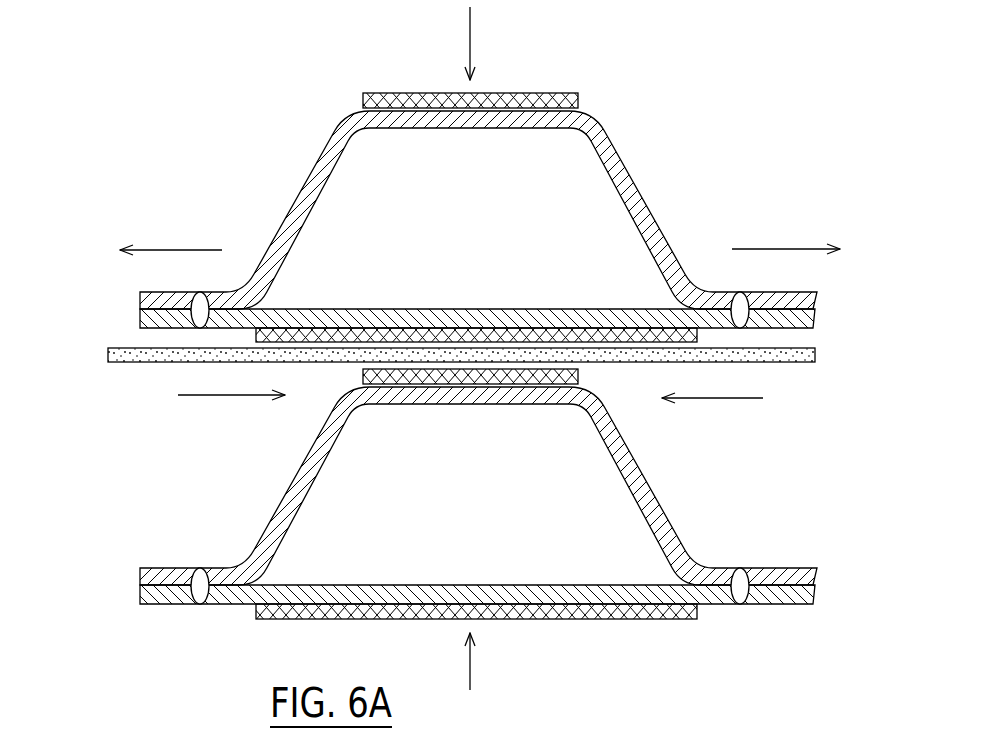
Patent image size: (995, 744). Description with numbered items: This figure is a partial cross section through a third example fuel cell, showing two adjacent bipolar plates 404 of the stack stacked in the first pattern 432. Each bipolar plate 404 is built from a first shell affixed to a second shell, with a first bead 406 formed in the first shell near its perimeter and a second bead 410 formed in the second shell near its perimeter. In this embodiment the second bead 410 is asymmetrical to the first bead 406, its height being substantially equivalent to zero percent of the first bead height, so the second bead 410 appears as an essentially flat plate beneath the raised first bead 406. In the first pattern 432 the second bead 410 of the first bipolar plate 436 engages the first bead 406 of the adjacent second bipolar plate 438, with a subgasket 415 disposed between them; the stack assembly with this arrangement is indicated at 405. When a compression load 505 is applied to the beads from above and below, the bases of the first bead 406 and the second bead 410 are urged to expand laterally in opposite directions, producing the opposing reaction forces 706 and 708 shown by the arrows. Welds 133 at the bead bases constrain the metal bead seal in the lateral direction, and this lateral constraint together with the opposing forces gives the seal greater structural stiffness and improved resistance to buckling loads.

The bipolar plate 404 is at (442, 348).
The thermal switch assembly 405 is at (453, 356).
The first pattern 432 is at (98, 394).
The first bead 406 is at (618, 168).
The second bead 410 is at (587, 318).
The subgasket 415 is at (788, 364).
The weld 133 is at (200, 303).
The first bipolar plate 436 is at (445, 348).
The second bipolar plate 438 is at (445, 348).
The compression load 505 is at (472, 38).
The reaction force 706 is at (172, 250).
The reaction force 708 is at (240, 395).